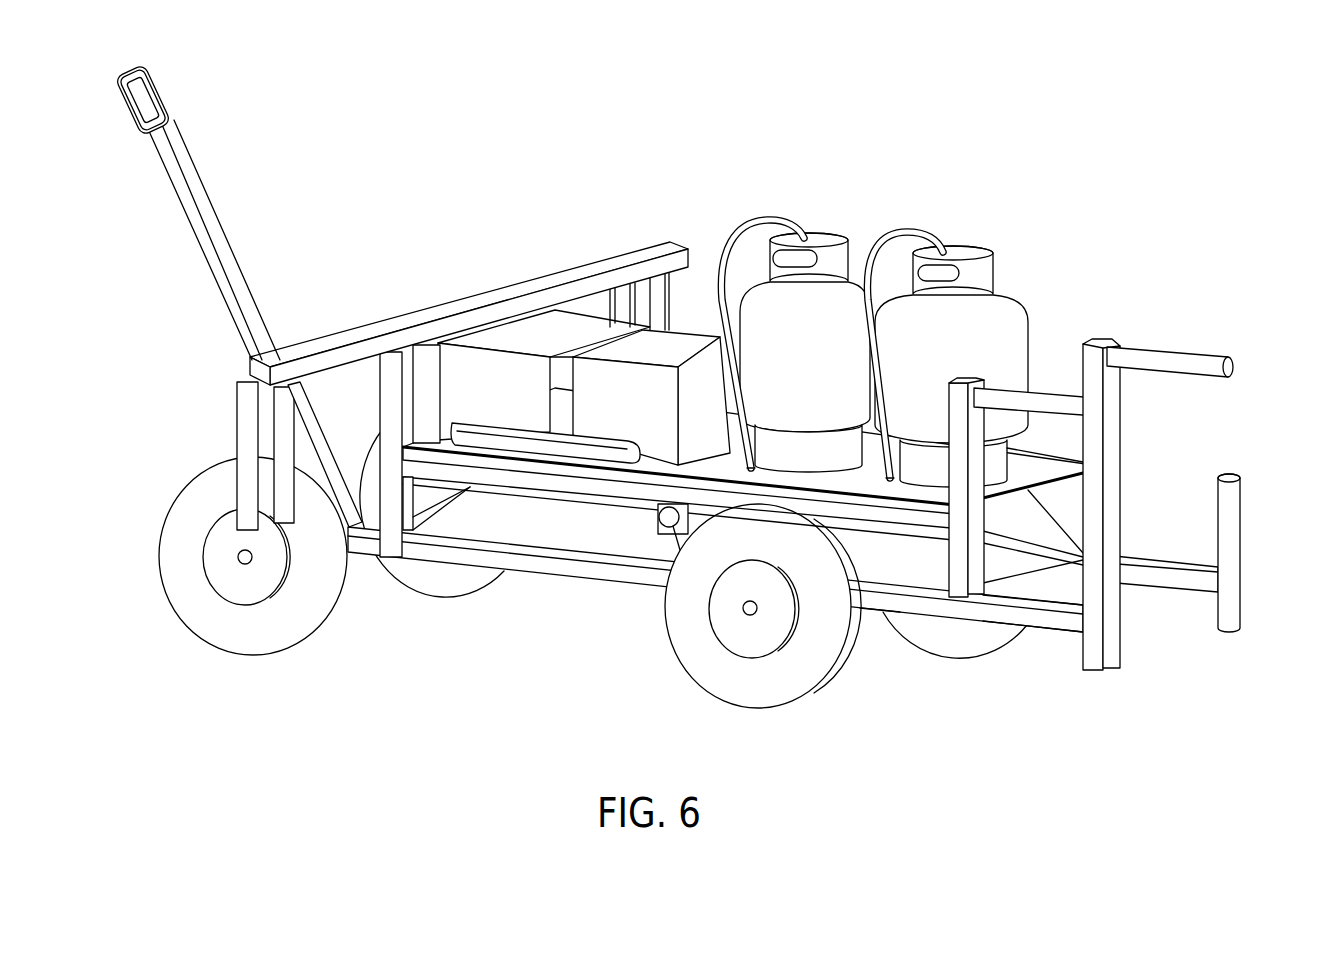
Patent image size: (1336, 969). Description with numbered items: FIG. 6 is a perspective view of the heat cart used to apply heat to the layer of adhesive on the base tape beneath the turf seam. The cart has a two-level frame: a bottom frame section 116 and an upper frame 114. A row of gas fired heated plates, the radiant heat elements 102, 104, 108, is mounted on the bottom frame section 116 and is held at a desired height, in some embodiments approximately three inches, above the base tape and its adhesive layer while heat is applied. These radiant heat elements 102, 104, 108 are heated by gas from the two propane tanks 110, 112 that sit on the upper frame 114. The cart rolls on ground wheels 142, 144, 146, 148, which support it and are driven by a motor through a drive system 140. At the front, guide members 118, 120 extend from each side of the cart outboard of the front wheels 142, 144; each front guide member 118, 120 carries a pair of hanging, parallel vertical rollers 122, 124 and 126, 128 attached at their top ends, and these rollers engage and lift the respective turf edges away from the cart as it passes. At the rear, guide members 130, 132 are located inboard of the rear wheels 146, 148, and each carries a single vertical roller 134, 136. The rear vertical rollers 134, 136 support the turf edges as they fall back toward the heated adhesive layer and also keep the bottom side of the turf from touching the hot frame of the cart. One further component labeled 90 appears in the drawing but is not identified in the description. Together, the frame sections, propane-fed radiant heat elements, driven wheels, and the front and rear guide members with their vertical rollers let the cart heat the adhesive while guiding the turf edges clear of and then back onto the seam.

The battery box 90 is at (595, 340).
The radiant heat element 102 is at (532, 488).
The radiant heat element 104 is at (607, 493).
The radiant heat element 108 is at (868, 600).
The propane tank 110 is at (832, 297).
The propane tank 112 is at (963, 303).
The upper frame 114 is at (851, 478).
The bottom frame section 116 is at (517, 573).
The front guide member 118 is at (298, 330).
The front guide member 120 is at (644, 232).
The vertical roller 122 is at (233, 440).
The vertical roller 124 is at (297, 505).
The vertical roller 126 is at (667, 307).
The vertical roller 128 is at (610, 307).
The rear guide member 130 is at (1168, 557).
The rear guide member 132 is at (1043, 630).
The vertical roller 134 is at (1240, 610).
The vertical roller 136 is at (1106, 652).
The drive system 140 is at (672, 535).
The ground wheel 142 is at (418, 587).
The ground wheel 144 is at (183, 613).
The ground wheel 146 is at (975, 647).
The ground wheel 148 is at (707, 663).